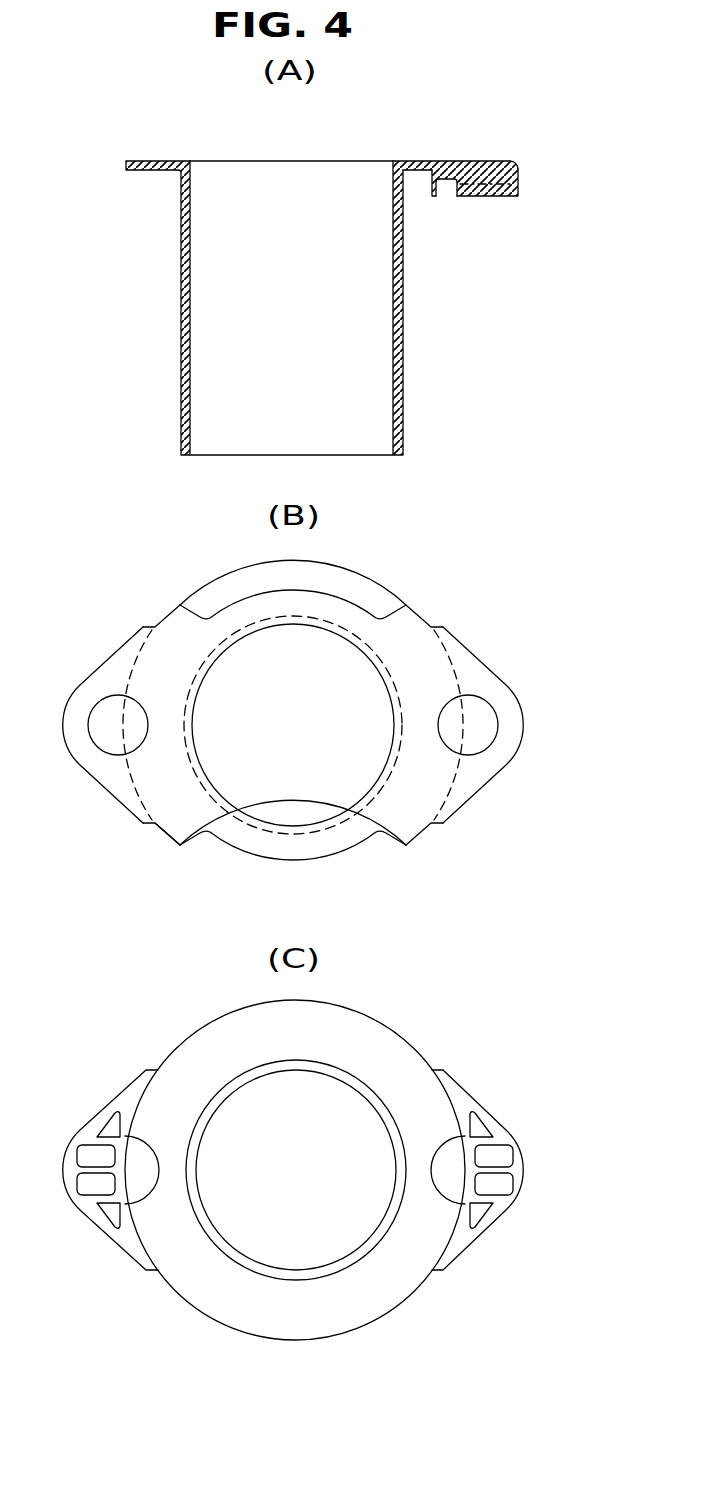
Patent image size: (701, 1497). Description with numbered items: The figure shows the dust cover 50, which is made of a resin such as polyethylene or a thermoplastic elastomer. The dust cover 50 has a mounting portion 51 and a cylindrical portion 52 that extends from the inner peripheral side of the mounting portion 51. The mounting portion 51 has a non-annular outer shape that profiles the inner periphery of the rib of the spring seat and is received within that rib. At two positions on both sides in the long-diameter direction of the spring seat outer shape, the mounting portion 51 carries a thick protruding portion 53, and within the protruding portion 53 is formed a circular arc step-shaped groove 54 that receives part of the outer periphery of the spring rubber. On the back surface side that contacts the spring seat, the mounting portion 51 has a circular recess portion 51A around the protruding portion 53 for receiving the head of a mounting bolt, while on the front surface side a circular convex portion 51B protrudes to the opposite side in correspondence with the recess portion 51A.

The dust cover 50 is at (161, 276).
The mounting portion 51 is at (147, 160).
The circular recess portion 51A is at (477, 160).
The circular convex portion 51B is at (438, 197).
The cylindrical portion 52 is at (181, 365).
The thick protruding portion 53 is at (517, 168).
The circular arc step-shaped groove 54 is at (453, 198).